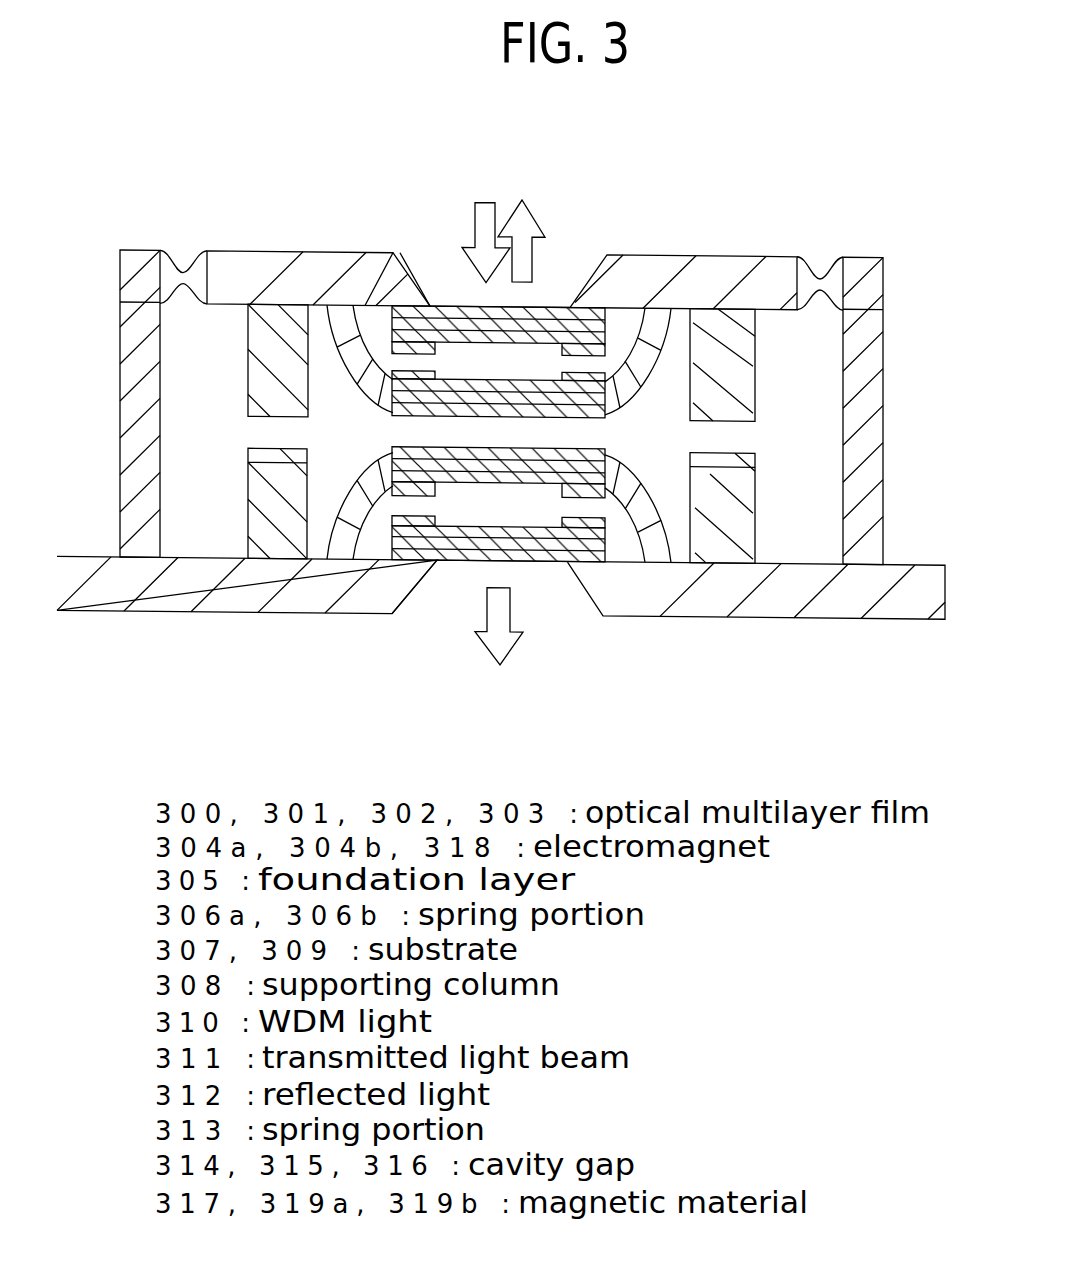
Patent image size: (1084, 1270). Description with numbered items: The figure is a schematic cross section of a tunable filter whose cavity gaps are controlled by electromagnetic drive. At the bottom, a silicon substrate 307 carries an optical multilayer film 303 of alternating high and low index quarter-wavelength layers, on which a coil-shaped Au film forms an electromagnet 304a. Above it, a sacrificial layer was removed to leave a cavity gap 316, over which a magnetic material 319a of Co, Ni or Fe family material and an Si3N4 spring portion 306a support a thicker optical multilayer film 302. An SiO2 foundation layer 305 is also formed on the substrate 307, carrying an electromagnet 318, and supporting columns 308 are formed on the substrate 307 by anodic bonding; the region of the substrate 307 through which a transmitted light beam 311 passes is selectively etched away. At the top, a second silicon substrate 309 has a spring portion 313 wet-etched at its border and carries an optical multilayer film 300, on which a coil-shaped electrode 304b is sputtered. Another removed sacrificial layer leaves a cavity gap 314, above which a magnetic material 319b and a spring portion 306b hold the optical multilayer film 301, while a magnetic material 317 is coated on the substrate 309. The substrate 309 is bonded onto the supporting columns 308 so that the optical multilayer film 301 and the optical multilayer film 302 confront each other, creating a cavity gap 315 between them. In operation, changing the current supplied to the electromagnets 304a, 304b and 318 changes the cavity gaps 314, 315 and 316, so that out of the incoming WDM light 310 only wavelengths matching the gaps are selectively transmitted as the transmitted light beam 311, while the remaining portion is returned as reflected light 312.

The optical multilayer film 300 is at (537, 303).
The optical multilayer film 301 is at (545, 395).
The optical multilayer film 302 is at (505, 476).
The optical multilayer film 303 is at (518, 553).
The electromagnet 304a is at (390, 565).
The electrode 304b is at (418, 300).
The foundation layer 305 is at (213, 599).
The spring portion 306a is at (322, 546).
The spring portion 306b is at (388, 398).
The substrate 307 is at (775, 592).
The supporting column 308 is at (860, 522).
The substrate 309 is at (335, 253).
The WDM light 310 is at (475, 199).
The transmitted light beam 311 is at (500, 640).
The reflected light 312 is at (523, 213).
The spring portion 313 is at (815, 263).
The cavity gap 314 is at (592, 352).
The cavity gap 315 is at (497, 435).
The cavity gap 316 is at (503, 504).
The magnetic material 317 is at (268, 446).
The electromagnet 318 is at (186, 300).
The magnetic material 319a is at (408, 485).
The magnetic material 319b is at (407, 342).